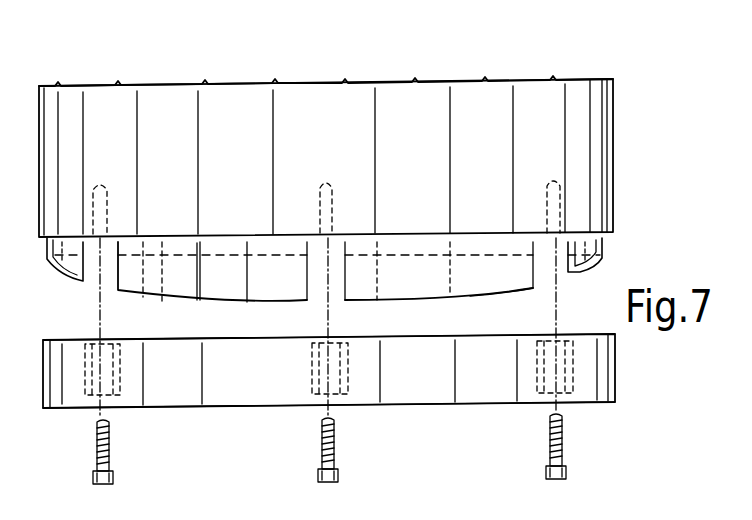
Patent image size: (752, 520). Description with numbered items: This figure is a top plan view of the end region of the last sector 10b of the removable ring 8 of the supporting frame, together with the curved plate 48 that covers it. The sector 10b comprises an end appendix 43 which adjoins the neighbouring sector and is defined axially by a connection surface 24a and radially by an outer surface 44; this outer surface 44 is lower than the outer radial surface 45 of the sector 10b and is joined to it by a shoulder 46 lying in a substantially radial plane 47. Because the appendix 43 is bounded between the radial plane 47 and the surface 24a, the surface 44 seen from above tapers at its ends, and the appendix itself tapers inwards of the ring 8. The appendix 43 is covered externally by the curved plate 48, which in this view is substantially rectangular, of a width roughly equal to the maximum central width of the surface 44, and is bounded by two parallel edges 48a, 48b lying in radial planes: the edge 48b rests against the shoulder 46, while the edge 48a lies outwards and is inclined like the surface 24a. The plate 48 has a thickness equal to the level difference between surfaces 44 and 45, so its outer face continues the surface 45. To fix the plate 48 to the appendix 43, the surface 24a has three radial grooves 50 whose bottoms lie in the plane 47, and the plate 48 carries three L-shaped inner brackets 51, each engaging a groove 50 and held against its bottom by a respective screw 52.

The ring 8 is at (617, 130).
The last sector 10b is at (191, 78).
The outer radial surface 45 is at (540, 176).
The outer surface 44 is at (247, 290).
The radial plane 47 is at (163, 298).
The shoulder 46 is at (200, 254).
The connection surface 24a is at (473, 300).
The end appendix 43 is at (598, 262).
The radial groove 50 is at (96, 258).
The curved plate 48 is at (245, 399).
The edge 48a is at (228, 409).
The edge 48b is at (428, 336).
The L-shaped inner bracket 51 is at (85, 416).
The screw 52 is at (113, 478).